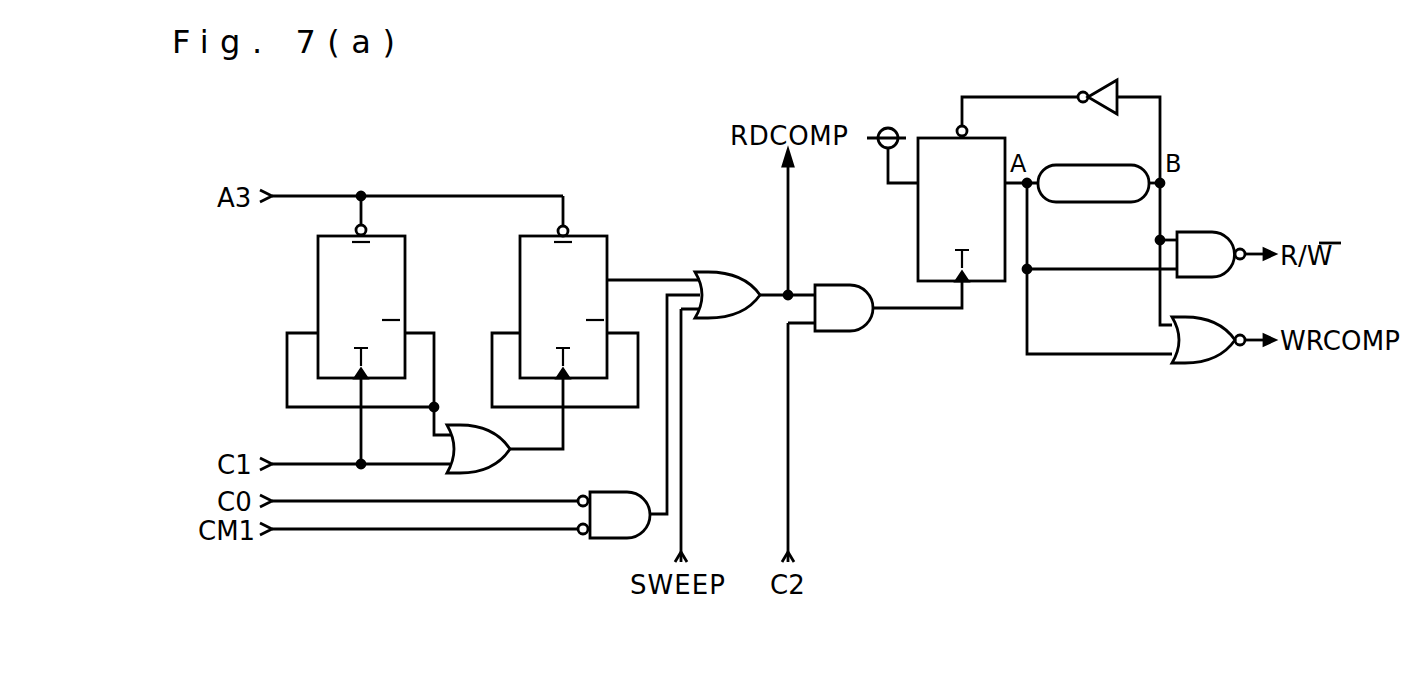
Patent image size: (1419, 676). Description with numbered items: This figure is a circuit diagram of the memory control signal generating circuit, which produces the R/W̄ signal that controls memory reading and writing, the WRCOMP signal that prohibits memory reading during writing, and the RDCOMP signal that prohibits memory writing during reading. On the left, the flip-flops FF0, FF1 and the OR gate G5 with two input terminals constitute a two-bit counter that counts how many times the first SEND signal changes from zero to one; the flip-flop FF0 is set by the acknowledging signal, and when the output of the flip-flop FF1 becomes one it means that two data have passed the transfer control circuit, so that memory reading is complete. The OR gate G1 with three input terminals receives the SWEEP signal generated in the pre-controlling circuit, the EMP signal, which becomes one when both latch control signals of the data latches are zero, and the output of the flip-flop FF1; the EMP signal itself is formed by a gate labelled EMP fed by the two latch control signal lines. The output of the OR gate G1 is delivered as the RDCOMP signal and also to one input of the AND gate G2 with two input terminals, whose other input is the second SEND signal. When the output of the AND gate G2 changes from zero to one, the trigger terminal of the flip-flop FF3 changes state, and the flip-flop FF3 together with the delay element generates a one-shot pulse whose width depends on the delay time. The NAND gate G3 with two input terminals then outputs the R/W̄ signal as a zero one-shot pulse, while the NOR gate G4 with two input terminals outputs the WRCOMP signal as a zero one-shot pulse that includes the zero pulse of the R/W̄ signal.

The flip-flop FF0 is at (369, 330).
The flip-flop FF1 is at (596, 301).
The flip-flop FF3 is at (1022, 217).
The OR gate with three input terminals G1 is at (755, 285).
The AND gate with two input terminals G2 is at (888, 293).
The NAND gate with two input terminals G3 is at (1226, 240).
The NOR gate with two input terminals G4 is at (1223, 328).
The OR gate with two input terminals G5 is at (505, 425).
The EMP signal EMP is at (639, 416).